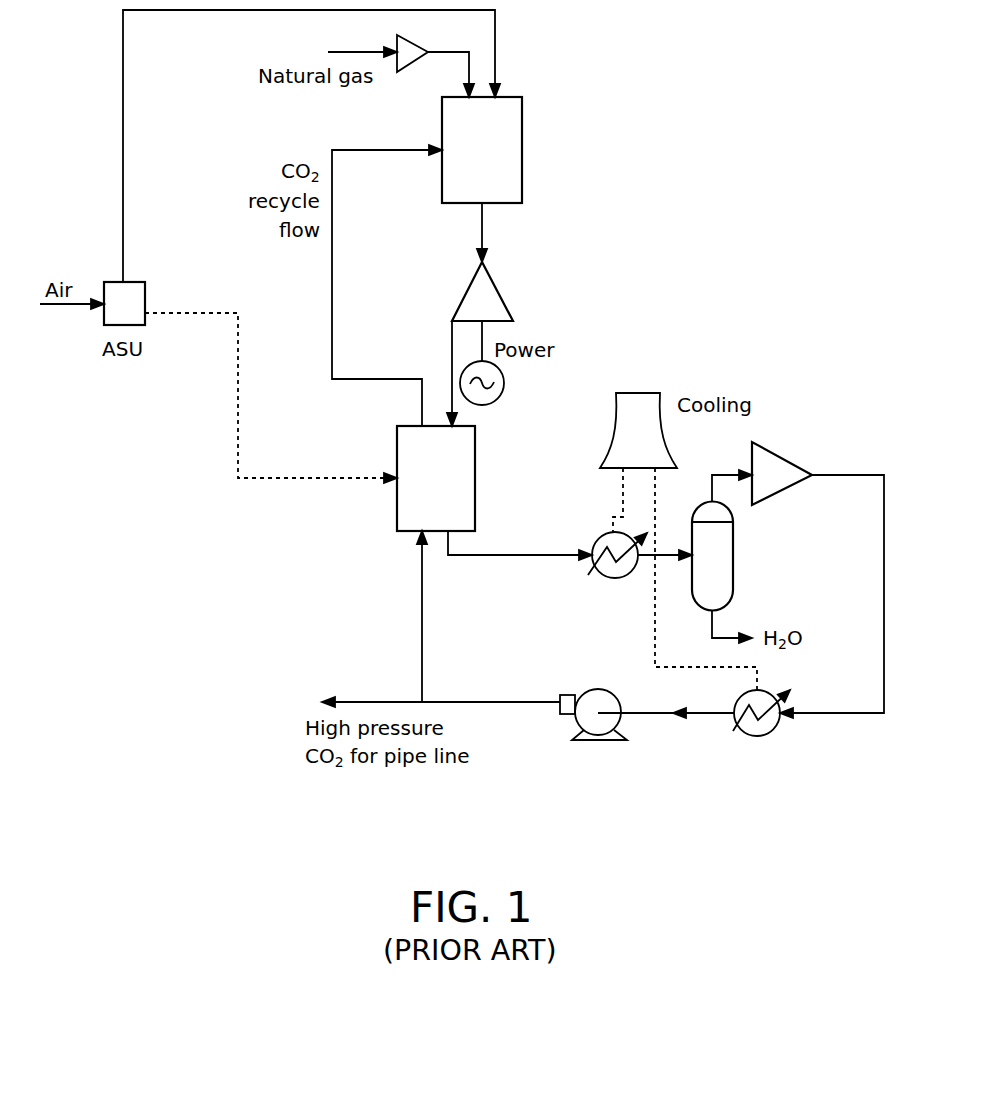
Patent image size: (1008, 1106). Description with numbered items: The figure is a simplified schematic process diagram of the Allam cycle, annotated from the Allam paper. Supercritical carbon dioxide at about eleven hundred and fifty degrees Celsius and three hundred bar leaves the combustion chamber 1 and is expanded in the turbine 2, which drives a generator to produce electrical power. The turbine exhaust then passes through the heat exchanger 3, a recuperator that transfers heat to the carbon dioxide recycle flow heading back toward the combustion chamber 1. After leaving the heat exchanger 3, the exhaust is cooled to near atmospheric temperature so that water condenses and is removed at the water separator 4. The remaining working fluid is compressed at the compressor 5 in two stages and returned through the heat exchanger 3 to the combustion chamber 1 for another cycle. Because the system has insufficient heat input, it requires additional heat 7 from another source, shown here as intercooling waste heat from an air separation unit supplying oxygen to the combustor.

The combustion chamber 1 is at (507, 178).
The turbine 2 is at (478, 286).
The heat exchanger 3 is at (397, 515).
The water separator 4 is at (718, 597).
The compressor 5 is at (601, 700).
The additional heat 7 is at (338, 476).